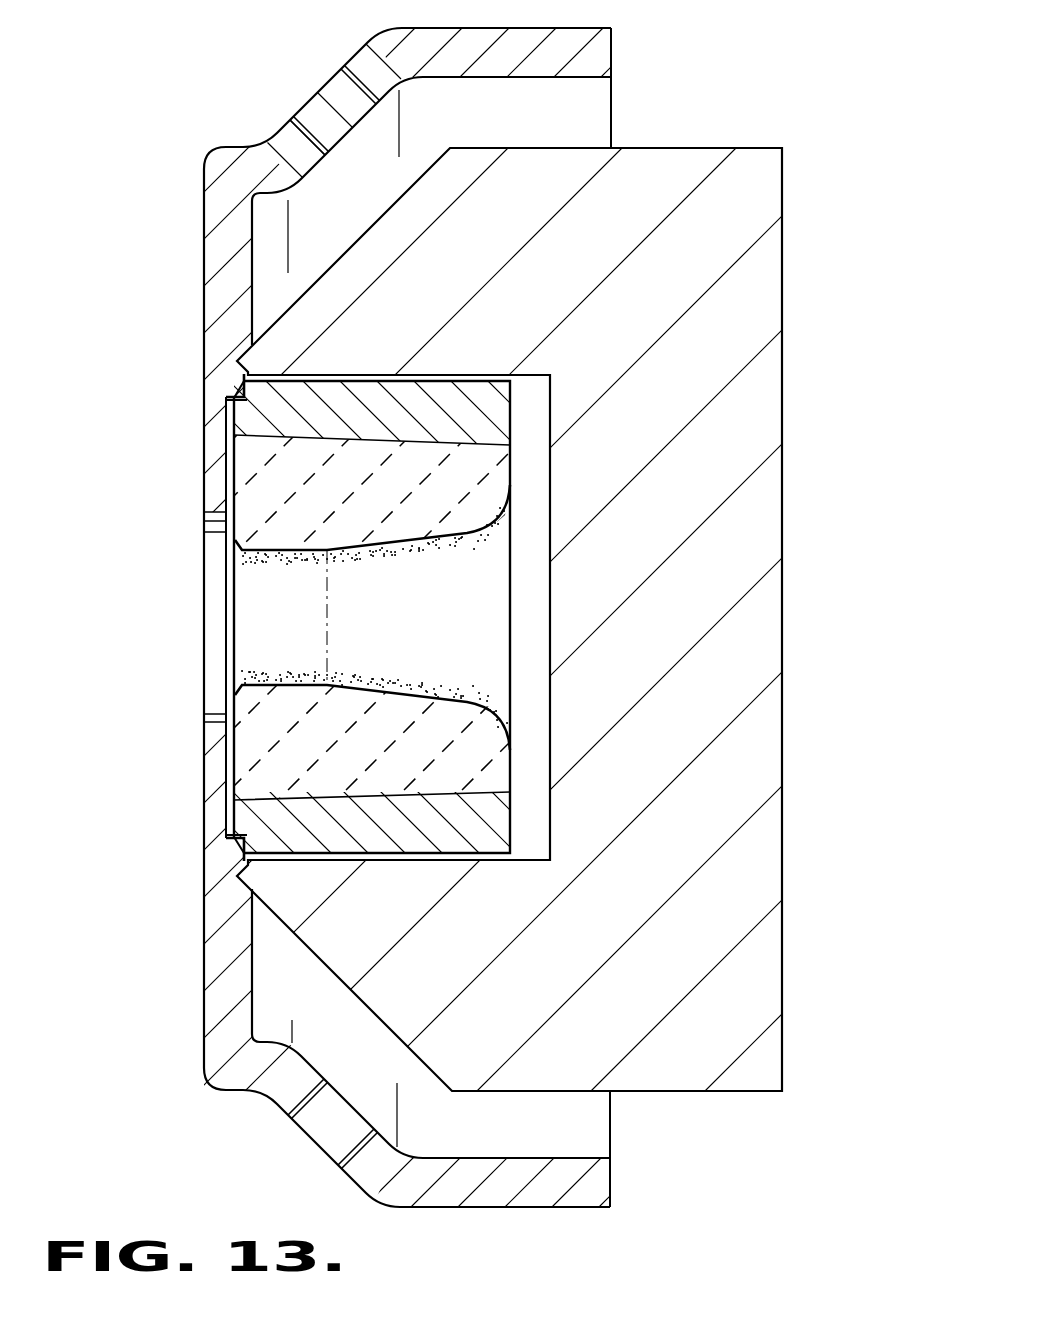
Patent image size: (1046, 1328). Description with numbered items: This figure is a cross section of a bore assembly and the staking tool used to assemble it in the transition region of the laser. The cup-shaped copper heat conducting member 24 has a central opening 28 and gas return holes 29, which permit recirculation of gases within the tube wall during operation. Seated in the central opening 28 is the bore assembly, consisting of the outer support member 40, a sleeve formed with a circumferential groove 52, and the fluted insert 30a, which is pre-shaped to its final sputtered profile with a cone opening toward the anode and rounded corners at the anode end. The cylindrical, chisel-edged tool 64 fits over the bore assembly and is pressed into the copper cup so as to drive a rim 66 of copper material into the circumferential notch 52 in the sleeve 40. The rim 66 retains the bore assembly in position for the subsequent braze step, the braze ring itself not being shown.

The heat conducting member 24 is at (205, 262).
The gas return hole 29 is at (342, 82).
The rim 66 is at (237, 392).
The circumferential groove 52 is at (232, 395).
The outer support member 40 is at (238, 420).
The central opening 28 is at (213, 722).
The fluted insert 30a is at (247, 742).
The chisel-edged tool 64 is at (775, 728).